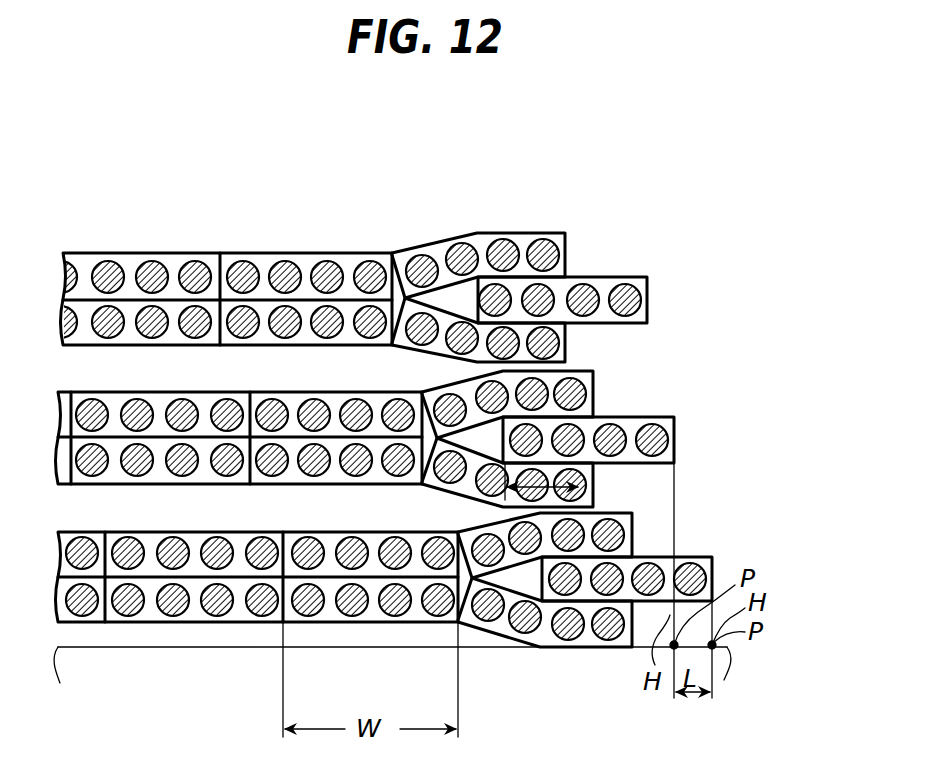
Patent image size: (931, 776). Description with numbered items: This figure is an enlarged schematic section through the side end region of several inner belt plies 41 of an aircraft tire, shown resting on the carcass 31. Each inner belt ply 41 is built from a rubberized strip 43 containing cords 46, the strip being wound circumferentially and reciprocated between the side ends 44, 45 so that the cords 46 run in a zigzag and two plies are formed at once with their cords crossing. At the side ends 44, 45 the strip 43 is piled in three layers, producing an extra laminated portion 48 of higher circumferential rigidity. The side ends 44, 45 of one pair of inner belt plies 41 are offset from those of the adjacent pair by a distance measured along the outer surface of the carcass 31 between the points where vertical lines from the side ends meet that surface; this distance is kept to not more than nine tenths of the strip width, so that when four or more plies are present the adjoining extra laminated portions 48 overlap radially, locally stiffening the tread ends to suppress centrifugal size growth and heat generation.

The carcass 31 is at (133, 657).
The inner belt ply 41 is at (308, 249).
The rubberized strip 43 is at (293, 472).
The side end 44 is at (677, 430).
The side end 45 is at (713, 558).
The cord 46 is at (262, 483).
The extra laminated portion 48 is at (578, 227).